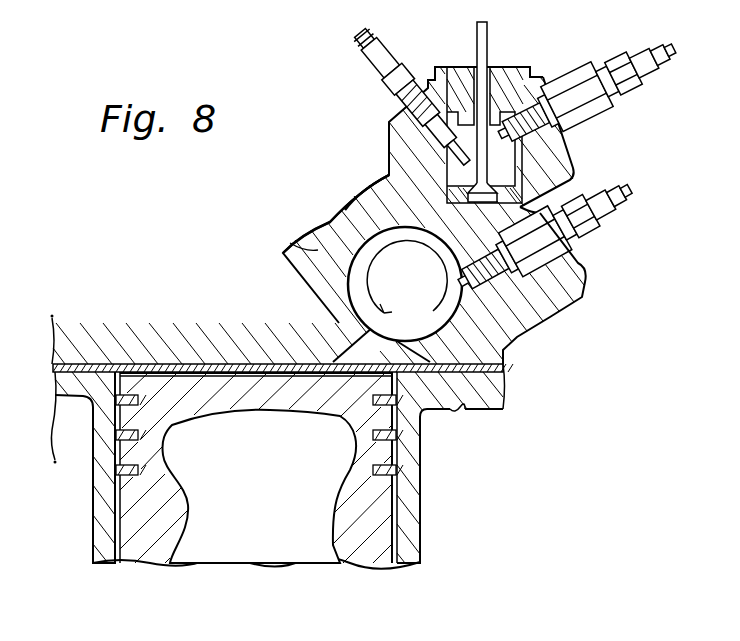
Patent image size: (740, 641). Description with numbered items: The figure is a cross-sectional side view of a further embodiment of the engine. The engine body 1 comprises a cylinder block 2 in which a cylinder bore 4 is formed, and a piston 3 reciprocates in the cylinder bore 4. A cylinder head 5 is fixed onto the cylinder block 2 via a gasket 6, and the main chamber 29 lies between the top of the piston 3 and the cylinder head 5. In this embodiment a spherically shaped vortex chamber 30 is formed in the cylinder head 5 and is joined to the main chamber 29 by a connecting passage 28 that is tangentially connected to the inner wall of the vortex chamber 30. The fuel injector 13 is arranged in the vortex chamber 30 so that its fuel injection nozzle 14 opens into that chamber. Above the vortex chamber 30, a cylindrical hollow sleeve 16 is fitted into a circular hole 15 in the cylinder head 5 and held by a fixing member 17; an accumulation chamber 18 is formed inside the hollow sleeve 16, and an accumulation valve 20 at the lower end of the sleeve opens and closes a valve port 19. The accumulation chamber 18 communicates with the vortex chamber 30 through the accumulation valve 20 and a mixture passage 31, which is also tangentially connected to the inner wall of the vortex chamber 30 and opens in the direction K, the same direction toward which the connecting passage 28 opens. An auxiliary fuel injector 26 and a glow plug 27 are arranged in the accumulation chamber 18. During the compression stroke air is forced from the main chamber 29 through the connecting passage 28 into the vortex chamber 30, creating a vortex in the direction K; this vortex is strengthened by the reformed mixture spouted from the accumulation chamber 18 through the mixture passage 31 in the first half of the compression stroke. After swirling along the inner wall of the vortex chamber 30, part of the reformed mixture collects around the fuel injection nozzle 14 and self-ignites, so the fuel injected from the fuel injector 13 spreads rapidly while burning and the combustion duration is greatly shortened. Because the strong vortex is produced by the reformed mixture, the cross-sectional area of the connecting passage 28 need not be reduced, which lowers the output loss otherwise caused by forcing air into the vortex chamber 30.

The engine body 1 is at (516, 434).
The cylinder block 2 is at (417, 542).
The piston 3 is at (347, 530).
The cylinder bore 4 is at (390, 553).
The cylinder head 5 is at (327, 227).
The gasket 6 is at (53, 368).
The fuel injector 13 is at (588, 236).
The fuel injection nozzle 14 is at (505, 346).
The circular hole 15 is at (520, 160).
The cylindrical hollow sleeve 16 is at (535, 140).
The fixing member 17 is at (505, 75).
The accumulation chamber 18 is at (450, 78).
The valve port 19 is at (572, 173).
The accumulation valve 20 is at (389, 176).
The auxiliary fuel injector 26 is at (620, 63).
The glow plug 27 is at (393, 82).
The connecting passage 28 is at (353, 337).
The main chamber 29 is at (180, 367).
The vortex chamber 30 is at (417, 284).
The mixture passage 31 is at (369, 212).
The vortex direction K is at (294, 252).